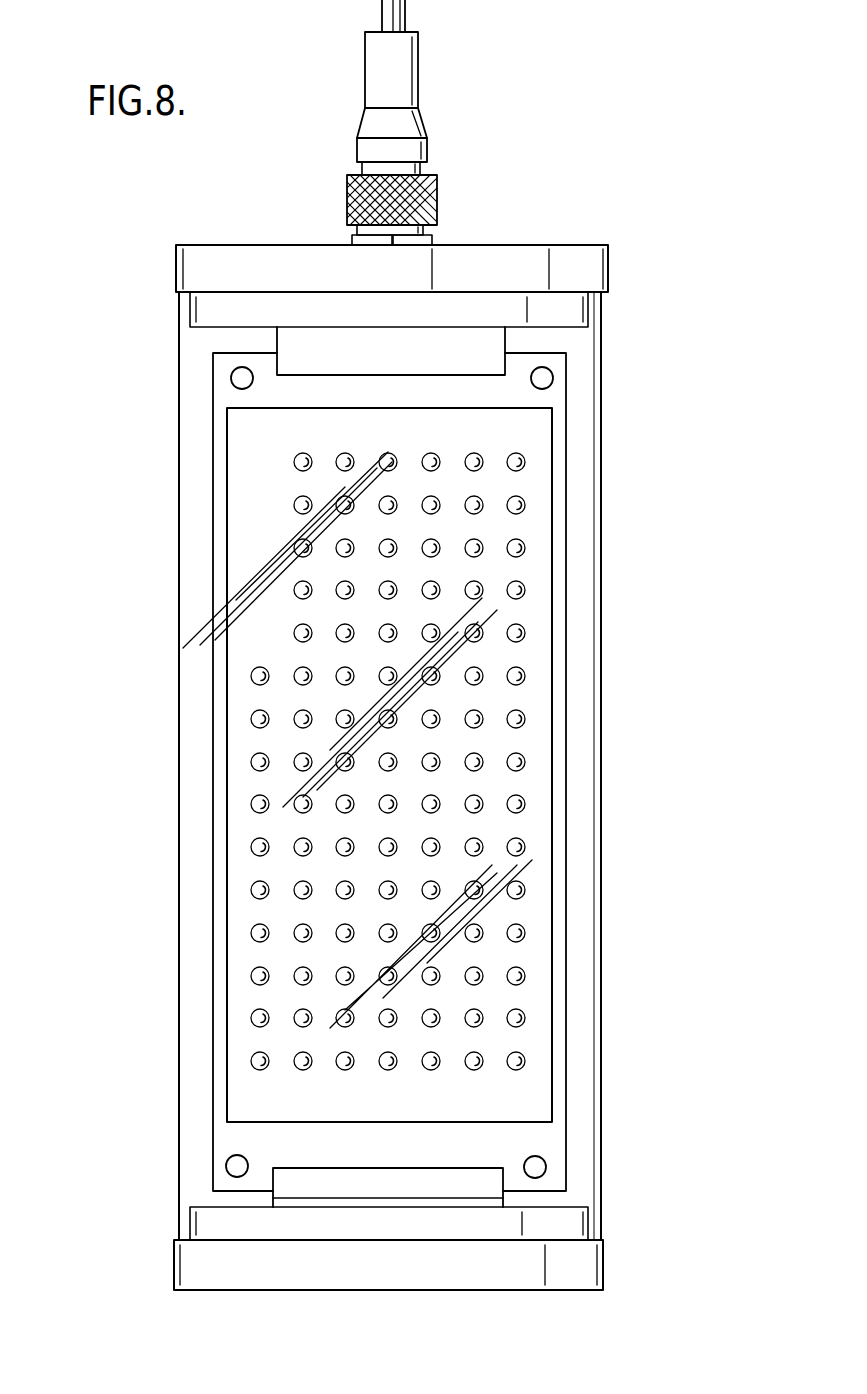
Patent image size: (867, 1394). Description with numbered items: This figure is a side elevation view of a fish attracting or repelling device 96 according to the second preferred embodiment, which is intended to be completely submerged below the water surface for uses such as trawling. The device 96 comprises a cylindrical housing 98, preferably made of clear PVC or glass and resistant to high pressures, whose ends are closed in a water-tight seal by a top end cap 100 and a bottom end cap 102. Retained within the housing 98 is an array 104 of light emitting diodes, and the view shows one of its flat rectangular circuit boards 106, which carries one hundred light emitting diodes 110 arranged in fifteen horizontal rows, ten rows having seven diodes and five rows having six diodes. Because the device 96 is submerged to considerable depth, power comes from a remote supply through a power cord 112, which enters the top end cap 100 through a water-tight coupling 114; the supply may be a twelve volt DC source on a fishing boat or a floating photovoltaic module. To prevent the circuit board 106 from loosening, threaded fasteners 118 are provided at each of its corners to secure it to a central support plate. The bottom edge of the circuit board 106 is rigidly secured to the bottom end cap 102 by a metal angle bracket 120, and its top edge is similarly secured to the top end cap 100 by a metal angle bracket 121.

The device 96 is at (158, 458).
The cylindrical housing 98 is at (602, 678).
The end cap 100 is at (609, 272).
The end cap 102 is at (604, 1262).
The array of light emitting diodes 104 is at (253, 782).
The circuit board 106 is at (540, 778).
The light emitting diodes 110 is at (527, 547).
The power cord 112 is at (406, 13).
The water-tight coupling 114 is at (438, 182).
The threaded fasteners 118 is at (240, 378).
The metal angle bracket 120 is at (280, 1180).
The metal angle bracket 121 is at (488, 347).